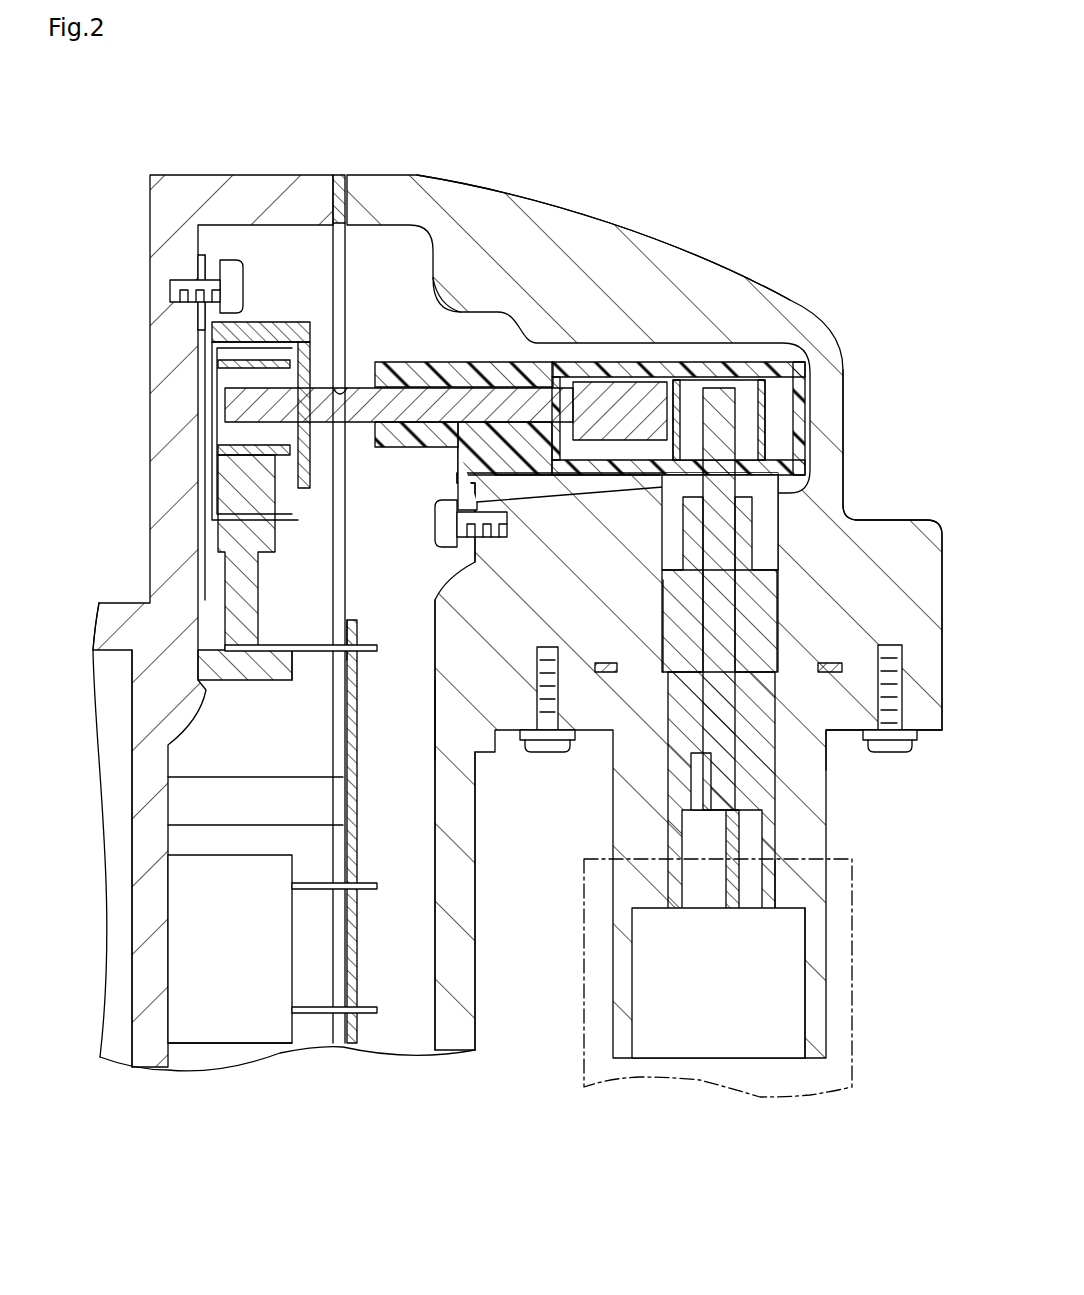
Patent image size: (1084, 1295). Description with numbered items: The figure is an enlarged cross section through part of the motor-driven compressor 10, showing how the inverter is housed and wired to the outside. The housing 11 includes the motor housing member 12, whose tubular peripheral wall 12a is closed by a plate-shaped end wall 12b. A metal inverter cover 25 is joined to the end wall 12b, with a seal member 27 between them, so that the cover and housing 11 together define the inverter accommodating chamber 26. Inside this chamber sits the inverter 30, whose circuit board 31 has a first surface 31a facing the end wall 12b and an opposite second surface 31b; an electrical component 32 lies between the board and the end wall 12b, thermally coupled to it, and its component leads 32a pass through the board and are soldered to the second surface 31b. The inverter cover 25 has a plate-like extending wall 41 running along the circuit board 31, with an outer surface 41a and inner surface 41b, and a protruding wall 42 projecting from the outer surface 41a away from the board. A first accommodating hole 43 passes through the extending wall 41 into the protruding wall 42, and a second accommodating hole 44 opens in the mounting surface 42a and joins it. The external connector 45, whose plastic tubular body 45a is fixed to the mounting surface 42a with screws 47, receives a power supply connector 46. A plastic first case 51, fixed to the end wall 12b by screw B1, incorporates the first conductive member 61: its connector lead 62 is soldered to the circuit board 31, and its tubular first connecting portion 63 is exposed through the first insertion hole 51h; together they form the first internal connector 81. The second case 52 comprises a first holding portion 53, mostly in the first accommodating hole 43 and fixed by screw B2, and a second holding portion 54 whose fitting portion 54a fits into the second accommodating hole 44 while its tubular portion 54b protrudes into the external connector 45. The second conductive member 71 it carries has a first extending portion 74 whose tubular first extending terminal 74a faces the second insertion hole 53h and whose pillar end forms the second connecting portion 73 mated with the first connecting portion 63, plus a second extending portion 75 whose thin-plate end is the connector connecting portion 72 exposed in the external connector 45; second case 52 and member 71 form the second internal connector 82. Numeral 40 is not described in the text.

The motor-driven compressor 10 is at (682, 187).
The housing 11 is at (165, 174).
The motor housing member 12 is at (150, 465).
The peripheral wall 12a is at (98, 625).
The end wall 12b is at (145, 866).
The inverter cover 25 is at (447, 174).
The inverter accommodating chamber 26 is at (378, 863).
The seal member 27 is at (340, 174).
The inverter 30 is at (382, 1031).
The circuit board 31 is at (358, 770).
The first surface 31a is at (347, 683).
The second surface 31b is at (358, 690).
The electrical component 32 is at (233, 1043).
The component leads 32a is at (378, 1010).
The second housing 40 is at (644, 616).
The extending wall 41 is at (476, 915).
The outer surface 41a is at (477, 833).
The inner surface 41b is at (433, 725).
The protruding wall 42 is at (848, 403).
The mounting surface 42a is at (830, 720).
The first accommodating hole 43 is at (580, 343).
The second accommodating hole 44 is at (788, 600).
The external connector 45 is at (836, 964).
The tubular body 45a is at (815, 945).
The power supply connector 46 is at (860, 1040).
The screws 47 is at (548, 753).
The first case 51 is at (248, 675).
The first insertion hole 51h is at (340, 386).
The second case 52 is at (905, 448).
The first holding portion 53 is at (790, 455).
The second insertion hole 53h is at (680, 485).
The second holding portion 54 is at (790, 505).
The fitting portion 54a is at (680, 595).
The tubular portion 54b is at (775, 898).
The first conductive member 61 is at (235, 515).
The connector lead 62 is at (372, 644).
The first connecting portion 63 is at (215, 386).
The second conductive member 71 is at (731, 373).
The connector connecting portion 72 is at (732, 925).
The second connecting portion 73 is at (262, 400).
The first extending portion 74 is at (520, 385).
The first extending terminal 74a is at (750, 385).
The second extending portion 75 is at (800, 652).
The first internal connector 81 is at (184, 350).
The second internal connector 82 is at (818, 378).
The screw B1 is at (243, 285).
The screw B2 is at (436, 523).